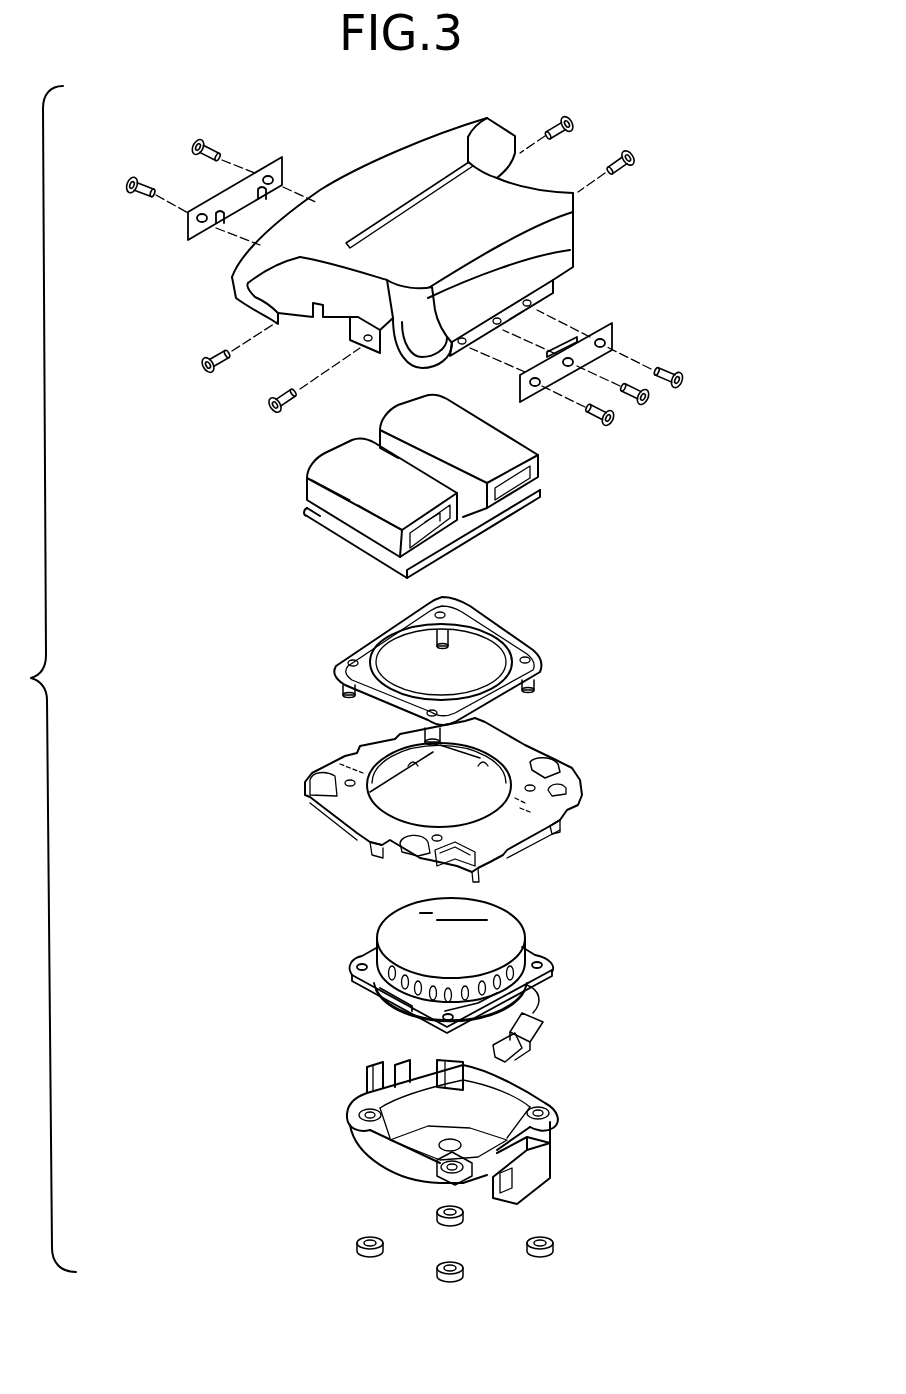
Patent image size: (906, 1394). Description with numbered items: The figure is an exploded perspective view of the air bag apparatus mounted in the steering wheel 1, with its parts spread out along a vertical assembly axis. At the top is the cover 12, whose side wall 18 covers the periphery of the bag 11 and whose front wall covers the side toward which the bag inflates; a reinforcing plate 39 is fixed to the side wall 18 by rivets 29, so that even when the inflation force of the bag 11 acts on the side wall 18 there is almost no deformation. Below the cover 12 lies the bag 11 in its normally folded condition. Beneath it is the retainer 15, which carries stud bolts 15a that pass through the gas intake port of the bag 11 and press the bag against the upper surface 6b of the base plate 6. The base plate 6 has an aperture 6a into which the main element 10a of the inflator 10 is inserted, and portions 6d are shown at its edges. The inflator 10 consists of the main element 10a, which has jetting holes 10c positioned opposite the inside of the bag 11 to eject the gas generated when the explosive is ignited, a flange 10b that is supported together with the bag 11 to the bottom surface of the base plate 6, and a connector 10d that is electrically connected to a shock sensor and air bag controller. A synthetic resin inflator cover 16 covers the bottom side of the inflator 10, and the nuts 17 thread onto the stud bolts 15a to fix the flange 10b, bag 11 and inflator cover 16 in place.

The steering wheel 1 is at (667, 202).
The cover 12 is at (515, 105).
The side wall 18 is at (402, 355).
The reinforcing plate 39 is at (276, 156).
The rivets 29 is at (133, 178).
The bag 11 is at (553, 473).
The retainer 15 is at (565, 630).
The stud bolt 15a is at (433, 651).
The base plate 6 is at (583, 792).
The aperture 6a is at (495, 763).
The upper surface 6b is at (552, 757).
The frame leg 6d is at (556, 820).
The inflator 10 is at (578, 960).
The main element 10a is at (500, 930).
The flange 10b is at (363, 981).
The jetting holes 10c is at (397, 1002).
The connector 10d is at (535, 1043).
The inflator cover 16 is at (567, 1127).
The nut 17 is at (548, 1238).